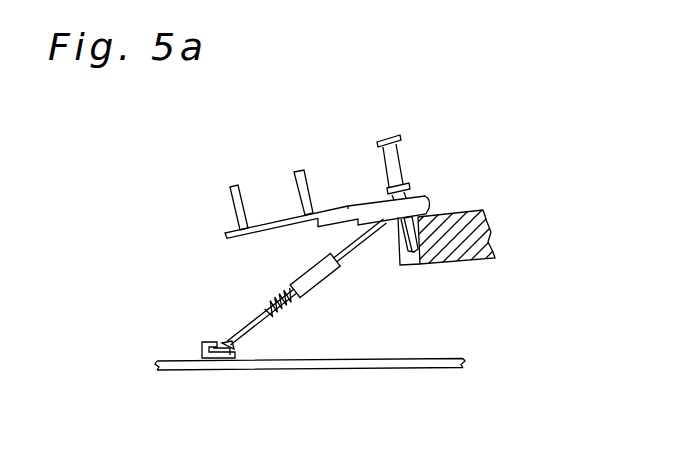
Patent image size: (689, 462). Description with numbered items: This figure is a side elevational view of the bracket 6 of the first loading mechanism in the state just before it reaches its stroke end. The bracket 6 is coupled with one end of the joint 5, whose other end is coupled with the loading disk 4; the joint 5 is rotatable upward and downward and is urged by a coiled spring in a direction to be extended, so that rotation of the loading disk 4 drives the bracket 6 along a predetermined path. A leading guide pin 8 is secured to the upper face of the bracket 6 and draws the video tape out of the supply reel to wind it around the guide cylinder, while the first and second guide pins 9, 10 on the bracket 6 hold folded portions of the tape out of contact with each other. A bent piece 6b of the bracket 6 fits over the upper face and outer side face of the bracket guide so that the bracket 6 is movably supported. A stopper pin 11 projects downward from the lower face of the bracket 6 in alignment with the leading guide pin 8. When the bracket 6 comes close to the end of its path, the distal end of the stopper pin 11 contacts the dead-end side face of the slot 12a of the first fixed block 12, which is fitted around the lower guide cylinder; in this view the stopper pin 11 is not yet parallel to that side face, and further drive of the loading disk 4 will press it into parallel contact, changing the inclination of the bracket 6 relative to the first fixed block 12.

The loading disk 4 is at (347, 370).
The joint 5 is at (276, 300).
The bracket 6 is at (427, 197).
The bent piece 6b is at (337, 207).
The leading guide pin 8 is at (394, 157).
The first guide pin 9 is at (298, 173).
The second guide pin 10 is at (236, 186).
The stopper pin 11 is at (410, 238).
The first fixed block 12 is at (473, 210).
The slot 12a is at (415, 264).